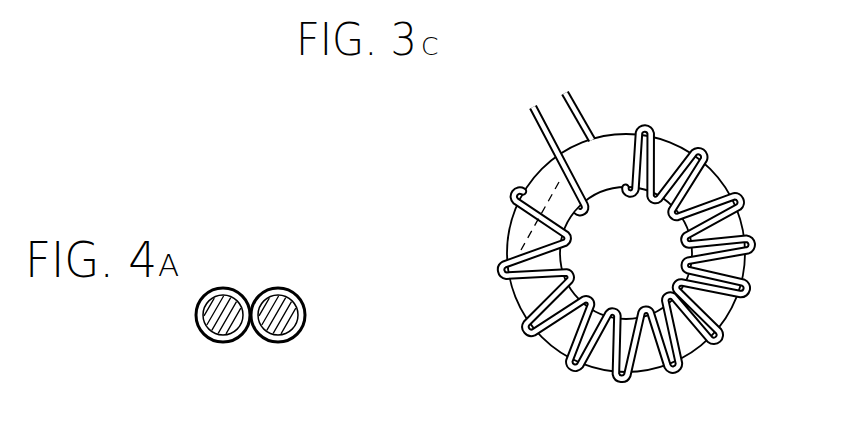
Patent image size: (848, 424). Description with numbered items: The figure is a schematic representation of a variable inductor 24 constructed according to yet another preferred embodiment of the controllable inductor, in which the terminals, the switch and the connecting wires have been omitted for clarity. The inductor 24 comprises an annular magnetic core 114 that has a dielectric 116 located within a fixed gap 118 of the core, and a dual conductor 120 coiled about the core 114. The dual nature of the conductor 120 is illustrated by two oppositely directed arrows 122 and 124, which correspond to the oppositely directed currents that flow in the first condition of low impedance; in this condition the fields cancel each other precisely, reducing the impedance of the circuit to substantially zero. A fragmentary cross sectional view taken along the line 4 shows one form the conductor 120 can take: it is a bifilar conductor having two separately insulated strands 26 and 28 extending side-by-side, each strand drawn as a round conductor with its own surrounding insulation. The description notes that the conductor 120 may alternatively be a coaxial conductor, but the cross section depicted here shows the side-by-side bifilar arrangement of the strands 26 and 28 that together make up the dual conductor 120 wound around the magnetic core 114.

In FIG. 3C, the variable inductor 24 is at (724, 130).
In FIG. 3C, the annular magnetic core 114 is at (723, 180).
In FIG. 3C, the dielectric 116 is at (650, 260).
In FIG. 3C, the fixed gap 118 is at (692, 348).
In FIG. 3C, the dual conductor 120 is at (566, 119).
In FIG. 4A, the dual conductor 120 is at (263, 305).
In FIG. 3C, the arrow 122 is at (576, 86).
In FIG. 3C, the arrow 124 is at (589, 99).
In FIG. 3C, the section line 4— 4 is at (555, 182).
In FIG. 4A, the insulated strand 26 is at (287, 312).
In FIG. 4A, the insulated strand 28 is at (222, 330).